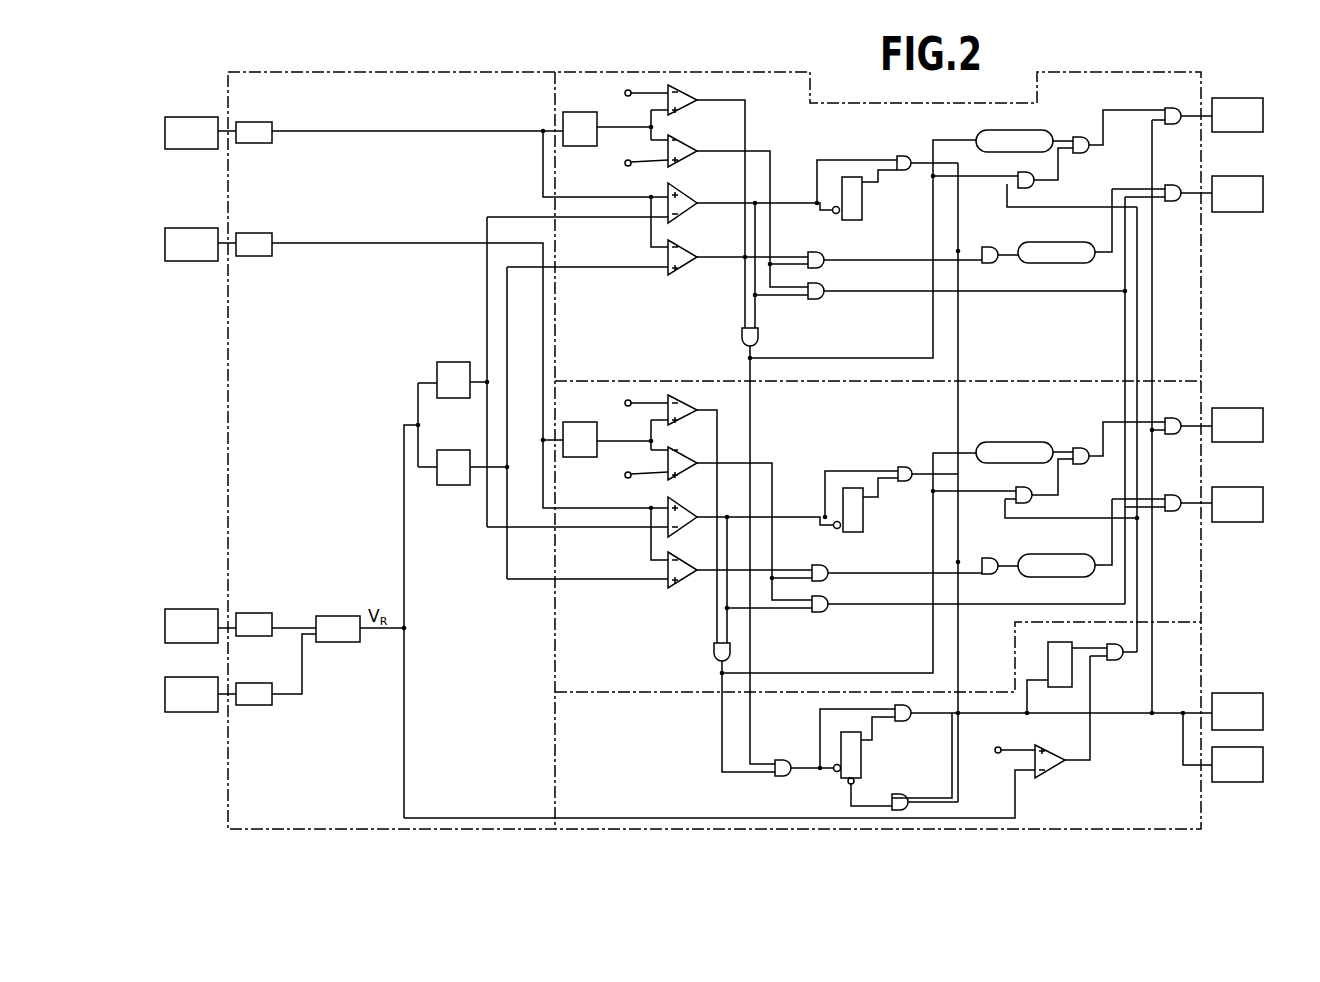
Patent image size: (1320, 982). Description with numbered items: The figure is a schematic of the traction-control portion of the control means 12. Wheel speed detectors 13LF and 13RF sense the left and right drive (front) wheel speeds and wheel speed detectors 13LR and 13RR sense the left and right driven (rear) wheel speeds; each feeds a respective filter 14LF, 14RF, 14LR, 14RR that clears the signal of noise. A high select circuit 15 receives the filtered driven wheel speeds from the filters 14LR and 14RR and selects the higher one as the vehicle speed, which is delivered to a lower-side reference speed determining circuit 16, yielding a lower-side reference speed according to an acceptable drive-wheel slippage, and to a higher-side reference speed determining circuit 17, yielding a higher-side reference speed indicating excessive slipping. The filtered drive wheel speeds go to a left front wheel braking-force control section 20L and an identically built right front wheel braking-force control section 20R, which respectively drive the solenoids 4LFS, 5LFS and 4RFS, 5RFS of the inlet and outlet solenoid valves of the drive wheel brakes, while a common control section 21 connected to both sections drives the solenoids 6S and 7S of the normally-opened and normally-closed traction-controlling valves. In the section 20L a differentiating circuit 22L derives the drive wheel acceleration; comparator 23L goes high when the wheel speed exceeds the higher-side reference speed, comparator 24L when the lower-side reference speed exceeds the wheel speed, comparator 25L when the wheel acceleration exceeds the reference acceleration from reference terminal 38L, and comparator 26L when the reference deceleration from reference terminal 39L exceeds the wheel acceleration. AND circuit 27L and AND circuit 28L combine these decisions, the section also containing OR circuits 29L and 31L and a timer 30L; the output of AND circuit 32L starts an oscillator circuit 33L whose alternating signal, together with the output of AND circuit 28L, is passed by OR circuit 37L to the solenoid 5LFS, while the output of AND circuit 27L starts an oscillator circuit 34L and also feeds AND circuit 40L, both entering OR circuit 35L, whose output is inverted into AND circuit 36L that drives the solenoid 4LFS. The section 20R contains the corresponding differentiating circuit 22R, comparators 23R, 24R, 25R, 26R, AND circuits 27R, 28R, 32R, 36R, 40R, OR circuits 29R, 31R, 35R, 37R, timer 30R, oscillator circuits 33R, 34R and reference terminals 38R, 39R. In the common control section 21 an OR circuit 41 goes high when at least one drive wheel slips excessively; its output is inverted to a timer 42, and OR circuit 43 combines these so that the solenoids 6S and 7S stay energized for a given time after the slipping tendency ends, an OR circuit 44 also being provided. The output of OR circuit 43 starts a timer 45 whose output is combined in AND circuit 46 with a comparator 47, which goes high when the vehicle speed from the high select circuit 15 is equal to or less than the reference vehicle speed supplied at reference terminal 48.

The control means 12 is at (738, 833).
The wheel speed detector 13RF is at (200, 150).
The wheel speed detector 13LF is at (200, 262).
The wheel speed detector 13RR is at (212, 609).
The wheel speed detector 13LR is at (202, 713).
The filter 14RF is at (254, 143).
The filter 14LF is at (254, 256).
The filter 14RR is at (253, 613).
The filter 14LR is at (260, 705).
The high select circuit 15 is at (338, 616).
The lower-side reference speed determining circuit 16 is at (437, 484).
The higher-side reference speed determining circuit 17 is at (437, 375).
The right front wheel braking-force control section 20R is at (553, 93).
The left front wheel braking-force control section 20L is at (553, 612).
The common control section 21 is at (553, 739).
The differentiating circuit 22R is at (580, 146).
The differentiating circuit 22L is at (580, 457).
The comparator 23R is at (689, 200).
The comparator 23L is at (692, 499).
The comparator 24R is at (689, 252).
The comparator 24L is at (688, 563).
The comparator 25R is at (690, 98).
The comparator 25L is at (690, 408).
The comparator 26R is at (690, 147).
The comparator 26L is at (687, 454).
The AND circuit 27R is at (760, 338).
The AND circuit 27L is at (712, 657).
The AND circuit 28R is at (835, 295).
The AND circuit 28L is at (835, 605).
The OR circuit 29R is at (835, 260).
The OR circuit 29L is at (835, 572).
The timer 30R is at (863, 213).
The timer 30L is at (864, 525).
The OR circuit 31R is at (905, 156).
The OR circuit 31L is at (908, 467).
The AND circuit 32R is at (990, 247).
The AND circuit 32L is at (988, 558).
The oscillator circuit 33R is at (1055, 242).
The oscillator circuit 33L is at (1050, 554).
The oscillator circuit 34R is at (1008, 131).
The oscillator circuit 34L is at (1008, 443).
The OR circuit 35R is at (1080, 137).
The OR circuit 35L is at (1080, 448).
The AND circuit 36R is at (1175, 108).
The AND circuit 36L is at (1175, 418).
The OR circuit 37R is at (1175, 185).
The OR circuit 37L is at (1175, 495).
The reference terminal 38R is at (624, 92).
The reference terminal 38L is at (624, 402).
The reference terminal 39R is at (626, 166).
The reference terminal 39L is at (626, 478).
The AND circuit 40R is at (1034, 185).
The AND circuit 40L is at (1016, 489).
The OR circuit 41 is at (780, 759).
The timer 42 is at (862, 766).
The OR circuit 43 is at (906, 720).
The OR circuit 44 is at (900, 794).
The timer 45 is at (1048, 650).
The AND circuit 46 is at (1115, 660).
The comparator 47 is at (1053, 768).
The reference speed setting terminal 48 is at (998, 753).
The solenoid 4RFS is at (1232, 132).
The solenoid 5RFS is at (1228, 212).
The solenoid 4LFS is at (1222, 408).
The solenoid 5LFS is at (1225, 522).
The solenoid 7S is at (1222, 693).
The solenoid 6S is at (1228, 782).